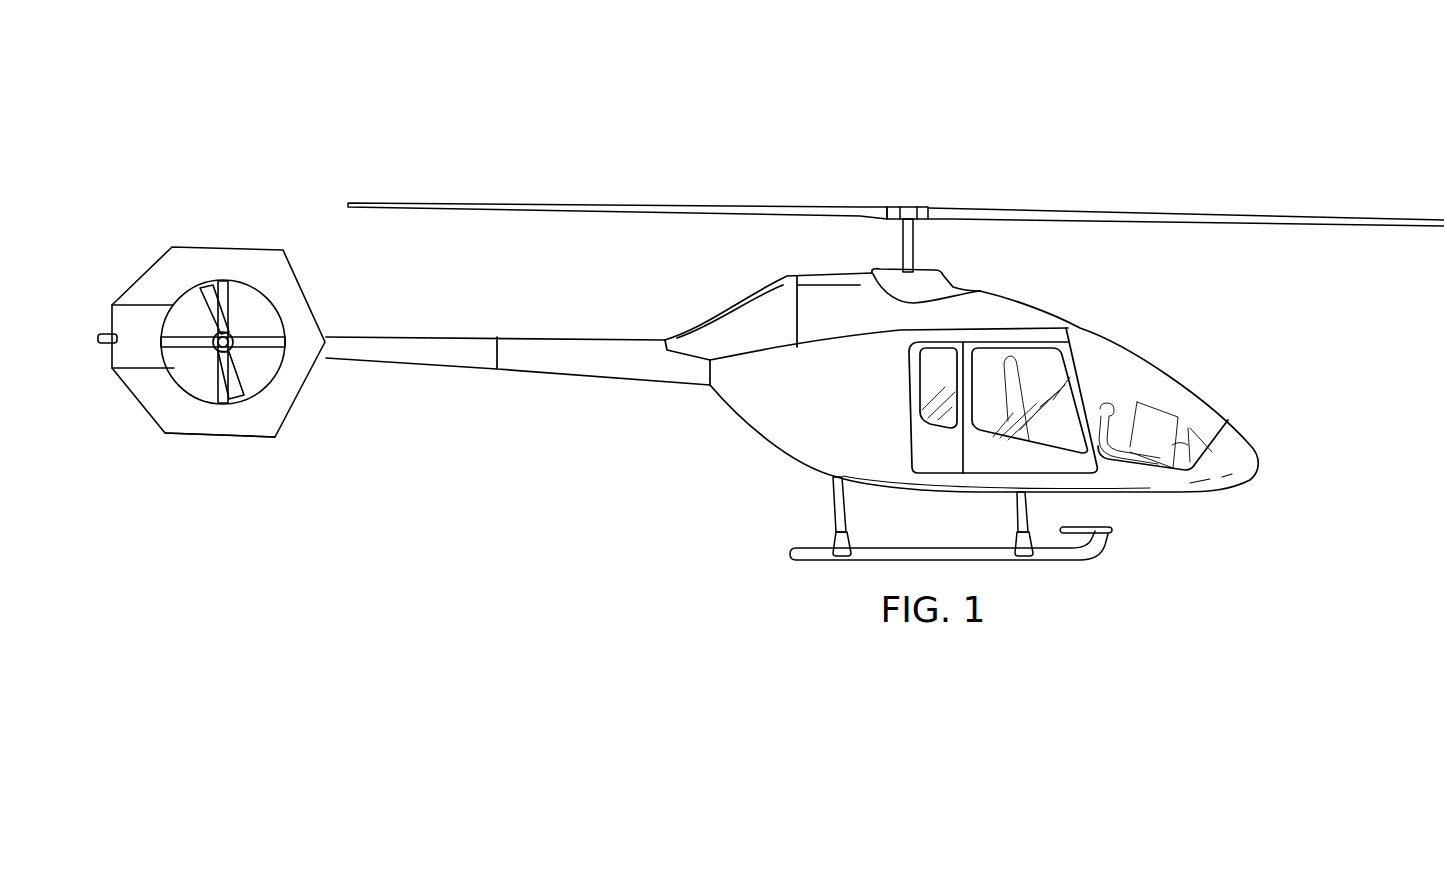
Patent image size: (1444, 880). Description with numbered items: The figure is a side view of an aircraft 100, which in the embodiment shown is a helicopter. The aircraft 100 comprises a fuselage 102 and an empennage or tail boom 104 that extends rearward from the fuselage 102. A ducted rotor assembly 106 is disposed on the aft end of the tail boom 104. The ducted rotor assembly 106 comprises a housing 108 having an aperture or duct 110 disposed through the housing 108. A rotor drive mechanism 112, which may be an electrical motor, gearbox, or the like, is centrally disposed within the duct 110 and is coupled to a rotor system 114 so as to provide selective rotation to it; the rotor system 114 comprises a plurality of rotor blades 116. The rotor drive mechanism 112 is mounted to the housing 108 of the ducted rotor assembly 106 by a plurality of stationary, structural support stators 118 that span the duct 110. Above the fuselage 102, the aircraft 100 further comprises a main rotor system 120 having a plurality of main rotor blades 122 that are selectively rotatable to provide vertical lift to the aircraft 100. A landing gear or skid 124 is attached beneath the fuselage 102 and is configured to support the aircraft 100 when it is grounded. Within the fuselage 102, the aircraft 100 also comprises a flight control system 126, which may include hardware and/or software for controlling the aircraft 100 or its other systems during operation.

The aircraft 100 is at (437, 106).
The fuselage 102 is at (1207, 492).
The tail boom 104 is at (545, 377).
The ducted rotor assembly 106 is at (141, 251).
The housing 108 is at (268, 250).
The duct 110 is at (287, 330).
The rotor drive mechanism 112 is at (183, 383).
The rotor system 114 is at (270, 310).
The rotor blades 116 is at (192, 297).
The stators 118 is at (240, 281).
The main rotor system 120 is at (915, 195).
The main rotor blades 122 is at (618, 205).
The skid 124 is at (833, 510).
The flight control system 126 is at (1158, 403).